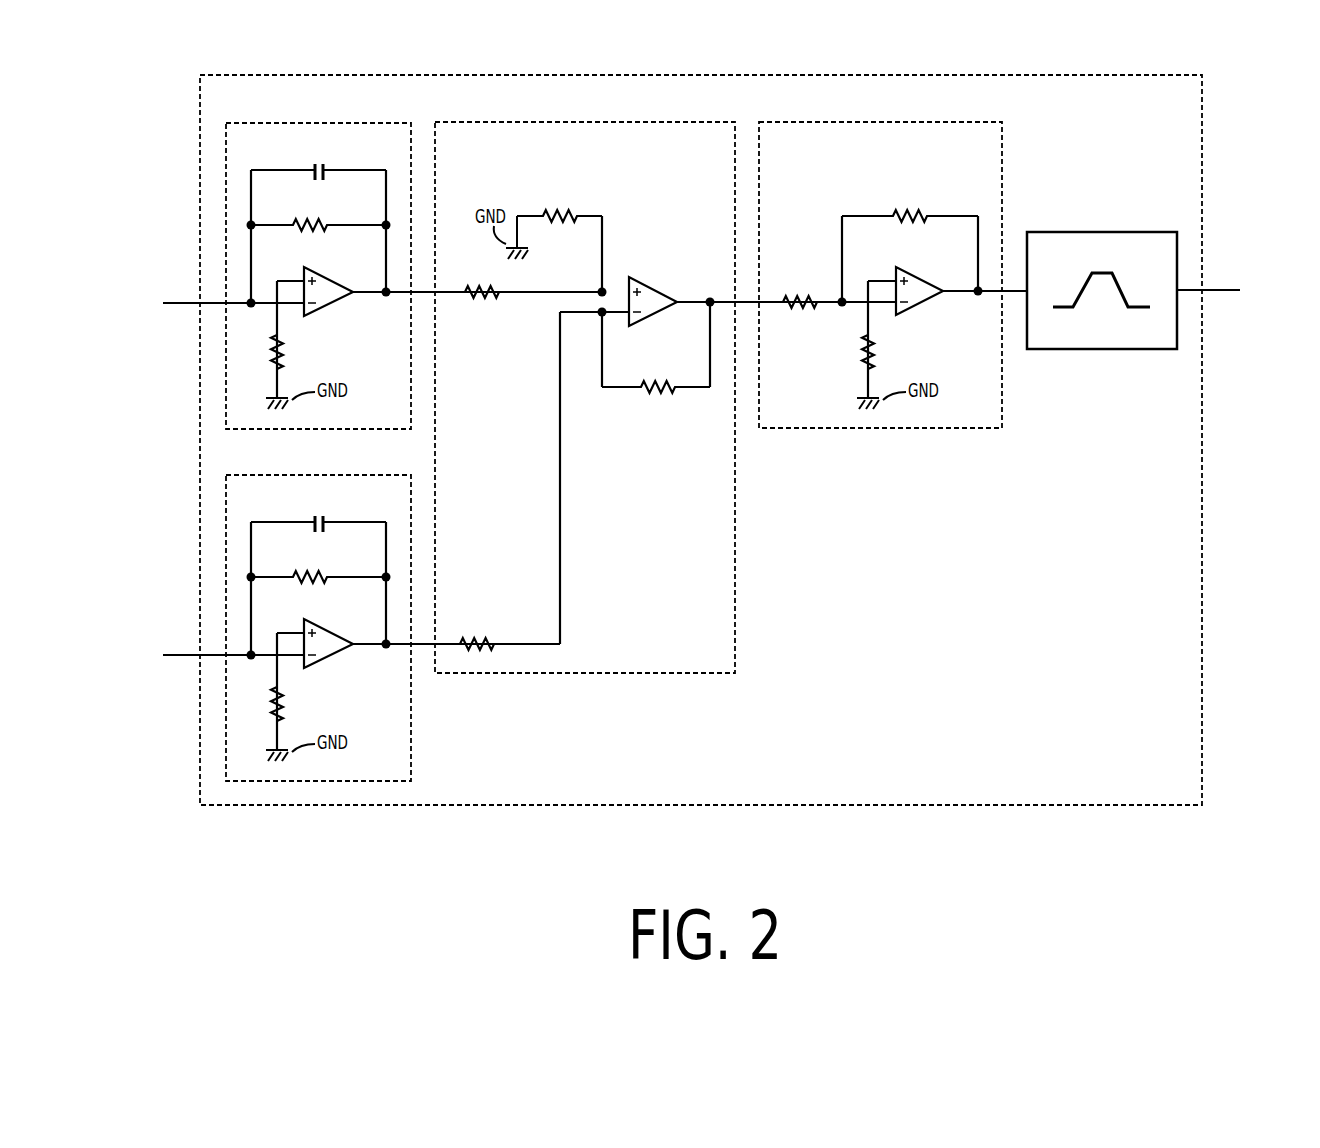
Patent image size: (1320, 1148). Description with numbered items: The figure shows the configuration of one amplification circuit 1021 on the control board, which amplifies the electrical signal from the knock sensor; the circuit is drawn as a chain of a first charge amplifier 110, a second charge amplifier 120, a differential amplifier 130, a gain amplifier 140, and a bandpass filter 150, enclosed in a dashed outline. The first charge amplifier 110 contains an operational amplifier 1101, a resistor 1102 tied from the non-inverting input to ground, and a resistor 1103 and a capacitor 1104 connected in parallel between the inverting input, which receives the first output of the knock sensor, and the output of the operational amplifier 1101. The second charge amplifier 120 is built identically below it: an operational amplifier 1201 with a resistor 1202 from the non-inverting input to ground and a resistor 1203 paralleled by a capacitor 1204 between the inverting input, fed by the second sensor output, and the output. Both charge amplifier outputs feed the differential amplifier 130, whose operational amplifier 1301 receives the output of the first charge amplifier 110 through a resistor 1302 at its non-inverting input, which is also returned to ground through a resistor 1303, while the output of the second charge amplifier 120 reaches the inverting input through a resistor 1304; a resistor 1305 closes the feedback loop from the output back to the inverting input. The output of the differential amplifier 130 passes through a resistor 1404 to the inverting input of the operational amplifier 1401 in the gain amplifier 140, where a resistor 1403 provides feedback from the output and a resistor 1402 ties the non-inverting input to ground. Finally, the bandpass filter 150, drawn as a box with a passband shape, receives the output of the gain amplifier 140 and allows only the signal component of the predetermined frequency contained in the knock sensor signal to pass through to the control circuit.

The amplification circuit 1021 is at (963, 75).
The first charge amplifier 110 is at (345, 123).
The operational amplifier 1101 is at (347, 264).
The resistor 1102 is at (290, 345).
The resistor 1103 is at (310, 225).
The capacitor 1104 is at (326, 170).
The second charge amplifier 120 is at (345, 475).
The operational amplifier 1201 is at (347, 616).
The resistor 1202 is at (290, 697).
The resistor 1203 is at (310, 577).
The capacitor 1204 is at (326, 522).
The differential amplifier 130 is at (667, 122).
The operational amplifier 1301 is at (672, 272).
The resistor 1302 is at (480, 298).
The resistor 1303 is at (560, 212).
The resistor 1304 is at (476, 636).
The resistor 1305 is at (658, 395).
The gain amplifier 140 is at (935, 122).
The operational amplifier 1401 is at (937, 262).
The resistor 1402 is at (882, 345).
The resistor 1403 is at (907, 212).
The resistor 1404 is at (803, 308).
The bandpass filter 150 is at (1110, 232).